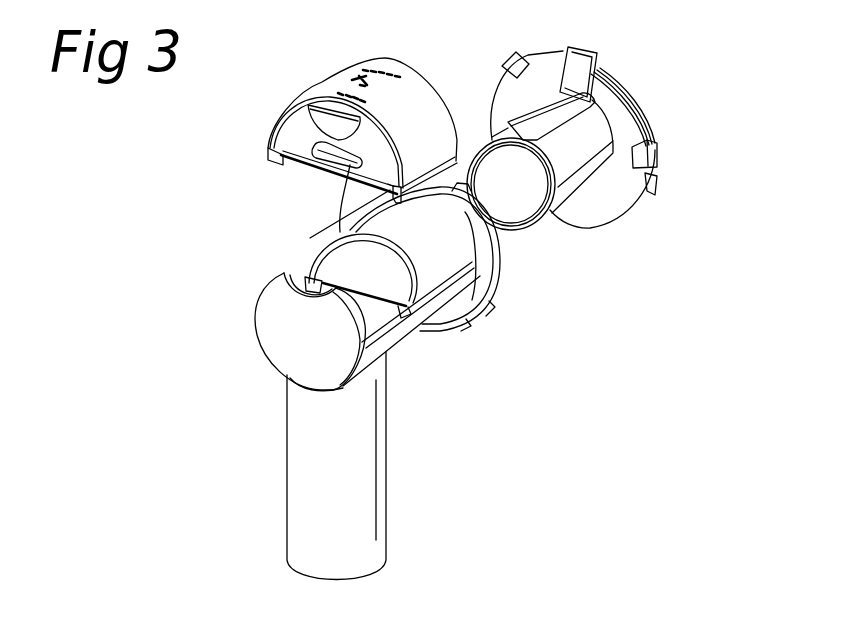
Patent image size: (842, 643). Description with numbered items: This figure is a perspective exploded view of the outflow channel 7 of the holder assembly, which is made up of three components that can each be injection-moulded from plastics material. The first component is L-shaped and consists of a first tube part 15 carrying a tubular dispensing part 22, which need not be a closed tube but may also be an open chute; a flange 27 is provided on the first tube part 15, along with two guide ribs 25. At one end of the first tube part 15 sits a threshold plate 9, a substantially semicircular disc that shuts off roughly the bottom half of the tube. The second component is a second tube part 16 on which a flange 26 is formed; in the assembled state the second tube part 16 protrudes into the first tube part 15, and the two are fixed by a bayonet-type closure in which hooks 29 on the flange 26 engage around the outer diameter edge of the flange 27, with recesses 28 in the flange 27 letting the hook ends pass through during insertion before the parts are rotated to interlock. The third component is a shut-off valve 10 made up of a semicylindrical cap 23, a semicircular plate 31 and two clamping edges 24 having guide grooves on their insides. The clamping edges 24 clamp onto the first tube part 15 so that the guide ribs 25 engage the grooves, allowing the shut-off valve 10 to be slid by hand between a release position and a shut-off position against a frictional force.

The outflow channel 7 is at (332, 126).
The semicylindrical cap 23 is at (354, 84).
The semicircular plate 31 is at (290, 125).
The clamping edges 24 is at (280, 166).
The shut-off valve 10 is at (401, 287).
The flange 27 is at (490, 258).
The first tube part 15 is at (430, 256).
The recesses 28 is at (477, 320).
The guide ribs 25 is at (435, 303).
The threshold plate 9 is at (373, 317).
The tubular dispensing part 22 is at (313, 482).
The flange 26 is at (602, 115).
The second tube part 16 is at (573, 137).
The hooks 29 is at (514, 62).